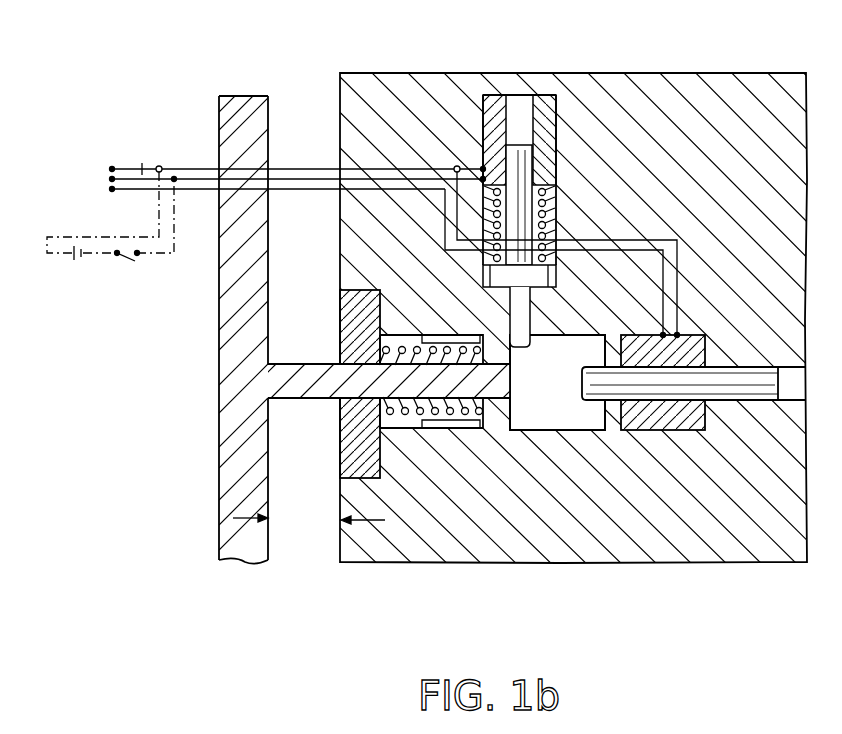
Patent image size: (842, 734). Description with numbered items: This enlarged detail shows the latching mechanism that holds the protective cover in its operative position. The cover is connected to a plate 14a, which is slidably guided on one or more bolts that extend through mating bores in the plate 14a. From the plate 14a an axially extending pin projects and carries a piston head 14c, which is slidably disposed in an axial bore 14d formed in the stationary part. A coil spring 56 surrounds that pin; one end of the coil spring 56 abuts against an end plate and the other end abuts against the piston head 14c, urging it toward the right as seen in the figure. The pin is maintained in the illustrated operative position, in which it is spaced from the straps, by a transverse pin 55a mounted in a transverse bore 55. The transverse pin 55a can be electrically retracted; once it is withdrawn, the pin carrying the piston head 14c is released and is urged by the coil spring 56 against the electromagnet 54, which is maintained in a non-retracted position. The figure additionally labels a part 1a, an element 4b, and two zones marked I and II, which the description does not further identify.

The mold block / housing 1a is at (678, 82).
The plate 14a is at (233, 292).
The actuating bar 4b is at (322, 395).
The coil spring 56 is at (372, 352).
The piston head 14c is at (455, 430).
The axial bore 14d is at (560, 420).
The transverse bore 55 is at (512, 105).
The transverse pin 55a is at (522, 322).
The electromagnet 54 is at (703, 340).
The spring I is at (400, 350).
The spring II is at (548, 207).